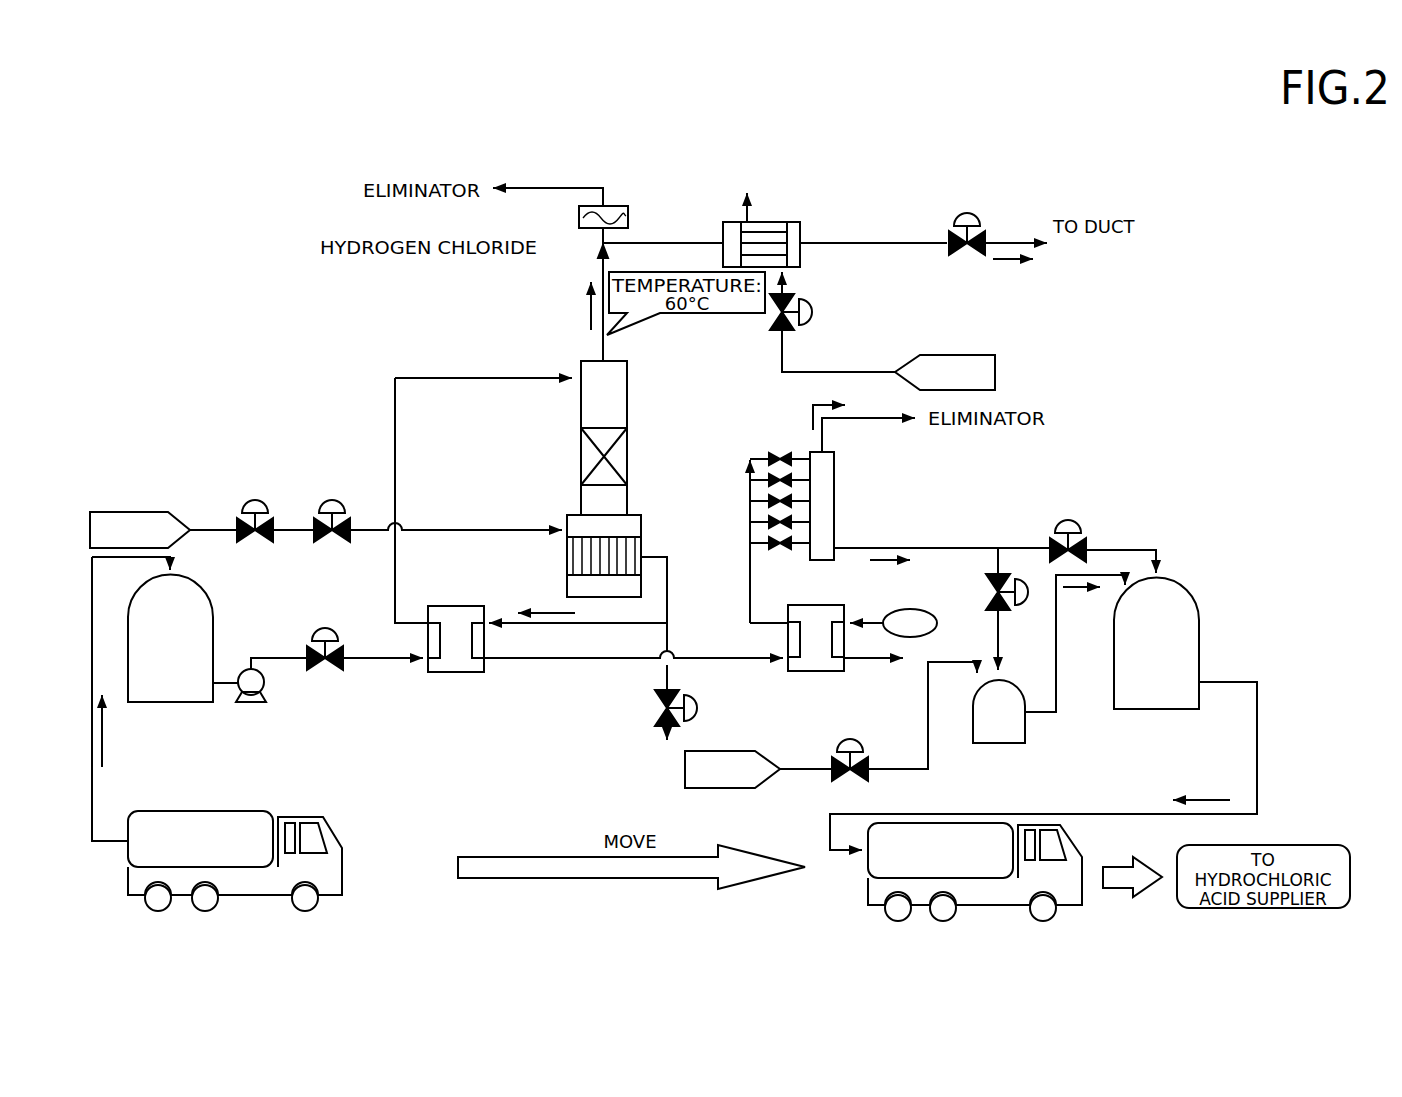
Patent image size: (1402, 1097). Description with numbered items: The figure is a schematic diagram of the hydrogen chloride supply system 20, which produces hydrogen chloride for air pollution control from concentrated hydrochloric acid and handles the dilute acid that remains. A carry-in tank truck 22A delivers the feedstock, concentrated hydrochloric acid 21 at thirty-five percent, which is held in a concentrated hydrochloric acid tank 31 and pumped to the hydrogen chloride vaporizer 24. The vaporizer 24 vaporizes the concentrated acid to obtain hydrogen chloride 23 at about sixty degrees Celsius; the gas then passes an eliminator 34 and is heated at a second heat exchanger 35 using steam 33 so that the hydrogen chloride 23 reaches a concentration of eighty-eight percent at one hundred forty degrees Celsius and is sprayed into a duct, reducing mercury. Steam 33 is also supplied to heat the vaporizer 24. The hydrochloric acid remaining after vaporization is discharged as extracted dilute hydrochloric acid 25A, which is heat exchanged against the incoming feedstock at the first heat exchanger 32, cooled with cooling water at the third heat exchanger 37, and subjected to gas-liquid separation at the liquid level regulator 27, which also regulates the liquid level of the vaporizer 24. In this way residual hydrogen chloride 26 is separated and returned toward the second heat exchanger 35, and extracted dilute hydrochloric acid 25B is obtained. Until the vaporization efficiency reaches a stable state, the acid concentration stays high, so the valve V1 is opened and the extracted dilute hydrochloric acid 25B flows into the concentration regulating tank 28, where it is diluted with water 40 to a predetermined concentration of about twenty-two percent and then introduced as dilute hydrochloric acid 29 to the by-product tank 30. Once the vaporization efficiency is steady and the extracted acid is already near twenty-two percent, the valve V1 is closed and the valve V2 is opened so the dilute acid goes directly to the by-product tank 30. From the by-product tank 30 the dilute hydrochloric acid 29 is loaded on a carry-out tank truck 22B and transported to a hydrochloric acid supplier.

The hydrogen chloride supply system 20 is at (879, 148).
The concentrated hydrochloric acid (35% hydrochloric acid) 21 is at (104, 727).
The carry-in tank truck 22A is at (343, 855).
The carry-out tank truck 22B is at (866, 858).
The hydrogen chloride 23 is at (583, 295).
The hydrogen chloride vaporizer 24 is at (642, 468).
The extracted dilute hydrochloric acid 25A is at (545, 615).
The extracted dilute hydrochloric acid 25B is at (890, 547).
The residual hydrogen chloride 26 is at (828, 400).
The liquid level regulator 27 is at (838, 468).
The concentration regulating tank 28 is at (1020, 742).
The dilute hydrochloric acid 29 is at (1086, 592).
The by-product tank 30 is at (1196, 579).
The concentrated hydrochloric acid tank 31 is at (213, 623).
The first heat exchanger 32 is at (454, 672).
The steam 33 is at (143, 512).
The eliminator 34 is at (634, 206).
The second heat exchanger 35 is at (873, 221).
The third heat exchanger 37 is at (846, 653).
The water 40 is at (712, 790).
The valve V1 is at (990, 586).
The valve V2 is at (1088, 536).